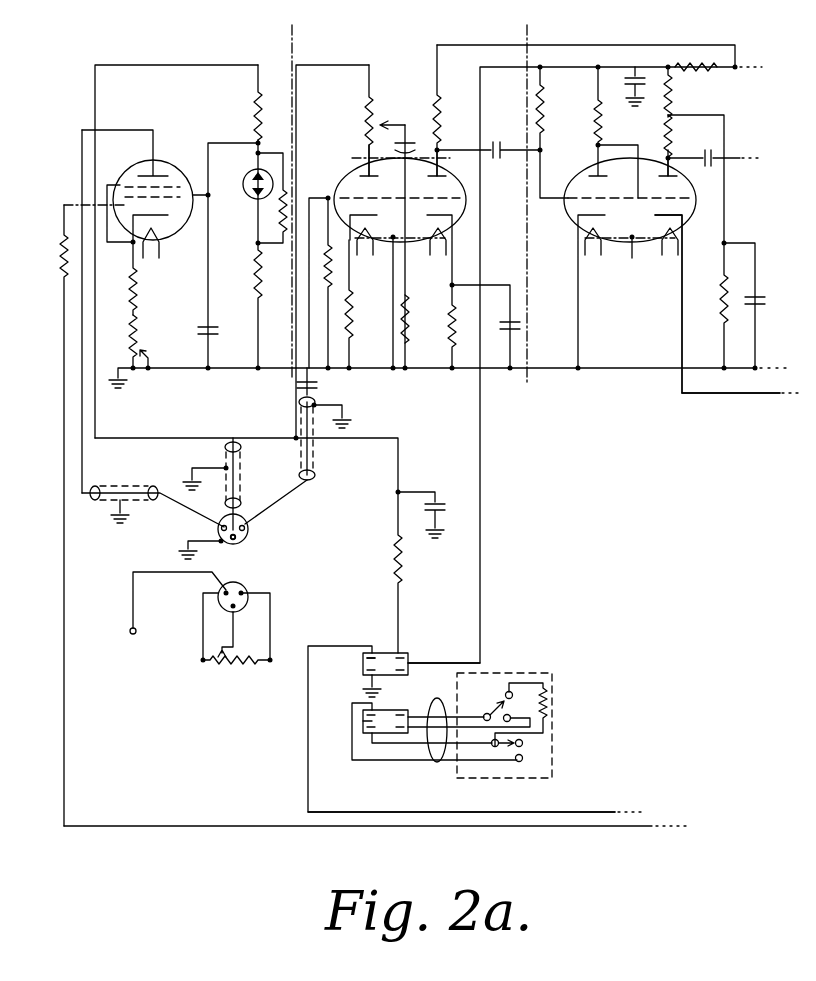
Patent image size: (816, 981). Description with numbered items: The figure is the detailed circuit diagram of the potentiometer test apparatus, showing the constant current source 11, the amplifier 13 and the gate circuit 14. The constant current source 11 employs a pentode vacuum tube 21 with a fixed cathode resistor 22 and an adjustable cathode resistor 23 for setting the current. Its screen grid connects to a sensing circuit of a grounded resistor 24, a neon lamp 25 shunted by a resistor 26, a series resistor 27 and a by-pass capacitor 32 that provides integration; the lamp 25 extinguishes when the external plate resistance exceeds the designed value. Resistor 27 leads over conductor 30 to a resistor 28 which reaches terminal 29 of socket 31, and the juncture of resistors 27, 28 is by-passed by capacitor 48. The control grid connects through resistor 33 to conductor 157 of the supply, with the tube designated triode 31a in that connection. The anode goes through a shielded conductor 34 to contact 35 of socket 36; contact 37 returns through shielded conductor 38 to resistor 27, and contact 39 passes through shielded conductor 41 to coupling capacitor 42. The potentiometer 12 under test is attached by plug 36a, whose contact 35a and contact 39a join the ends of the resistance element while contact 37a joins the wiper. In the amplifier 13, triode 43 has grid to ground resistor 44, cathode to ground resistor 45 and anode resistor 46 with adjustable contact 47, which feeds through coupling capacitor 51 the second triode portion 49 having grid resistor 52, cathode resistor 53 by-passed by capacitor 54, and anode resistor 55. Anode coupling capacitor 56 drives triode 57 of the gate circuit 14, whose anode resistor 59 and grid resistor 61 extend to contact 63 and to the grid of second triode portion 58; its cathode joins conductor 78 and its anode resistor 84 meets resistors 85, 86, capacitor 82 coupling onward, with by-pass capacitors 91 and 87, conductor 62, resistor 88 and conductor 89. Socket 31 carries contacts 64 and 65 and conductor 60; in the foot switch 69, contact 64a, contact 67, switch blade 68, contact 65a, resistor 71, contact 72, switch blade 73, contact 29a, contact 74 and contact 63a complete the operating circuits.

The constant current source 11 is at (200, 51).
The potentiometer 12 is at (246, 701).
The amplifier 13 is at (385, 48).
The gate circuit 14 is at (590, 38).
The pentode vacuum tube 21 is at (168, 165).
The fixed cathode resistor 22 is at (137, 286).
The adjustable cathode resistor 23 is at (138, 334).
The resistor 24 is at (256, 283).
The neon lamp 25 is at (252, 194).
The resistor 26 is at (288, 205).
The series resistor 27 is at (262, 100).
The resistor 28 is at (404, 575).
The terminal 29 is at (386, 657).
The contact 29a is at (406, 715).
The conductor 30 is at (197, 438).
The socket 31 is at (363, 670).
The triode 31a is at (362, 722).
The capacitor 32 is at (212, 333).
The resistor 33 is at (60, 262).
The shielded conductor 34 is at (82, 425).
The contact 35 is at (218, 528).
The contact 35a is at (222, 595).
The socket 36 is at (245, 538).
The plug 36a is at (247, 603).
The contact 37 is at (233, 545).
The contact 37a is at (228, 610).
The shielded conductor 38 is at (228, 447).
The contact 39 is at (248, 526).
The contact 39a is at (248, 590).
The shielded conductor 41 is at (300, 470).
The coupling capacitor 42 is at (295, 402).
The triode 43 is at (352, 172).
The grid to ground resistor 44 is at (332, 282).
The cathode to ground resistor 45 is at (352, 322).
The anode resistor 46 is at (365, 125).
The adjustable contact 47 is at (383, 124).
The capacitor 48 is at (448, 500).
The second triode portion 49 is at (462, 187).
The coupling capacitor 51 is at (412, 142).
The grid to ground resistor 52 is at (410, 305).
The resistor 53 is at (448, 332).
The capacitor 54 is at (518, 332).
The anode resistor 55 is at (440, 108).
The anode coupling capacitor 56 is at (506, 142).
The triode 57 is at (585, 180).
The second triode portion 58 is at (680, 212).
The anode resistor 59 is at (602, 136).
The conductor 60 is at (596, 814).
The grid resistor 61 is at (545, 125).
The conductor 62 is at (484, 250).
The contact 63 is at (410, 670).
The contact 63a is at (403, 735).
The contact 64 is at (380, 655).
The contact 64a is at (370, 712).
The contact 65 is at (382, 680).
The contact 65a is at (372, 738).
The contact 67 is at (524, 758).
The switch blade 68 is at (500, 748).
The foot switch 69 is at (552, 685).
The resistor 71 is at (545, 712).
The contact 72 is at (508, 690).
The switch blade 73 is at (486, 712).
The contact 74 is at (511, 717).
The conductor 78 is at (728, 398).
The capacitor 82 is at (722, 166).
The anode resistor 84 is at (674, 150).
The resistor 85 is at (720, 292).
The resistor 86 is at (676, 95).
The capacitor 87 is at (628, 78).
The resistor 88 is at (706, 62).
The conductor 89 is at (637, 44).
The by-pass capacitor 91 is at (758, 298).
The conductor 157 is at (560, 828).